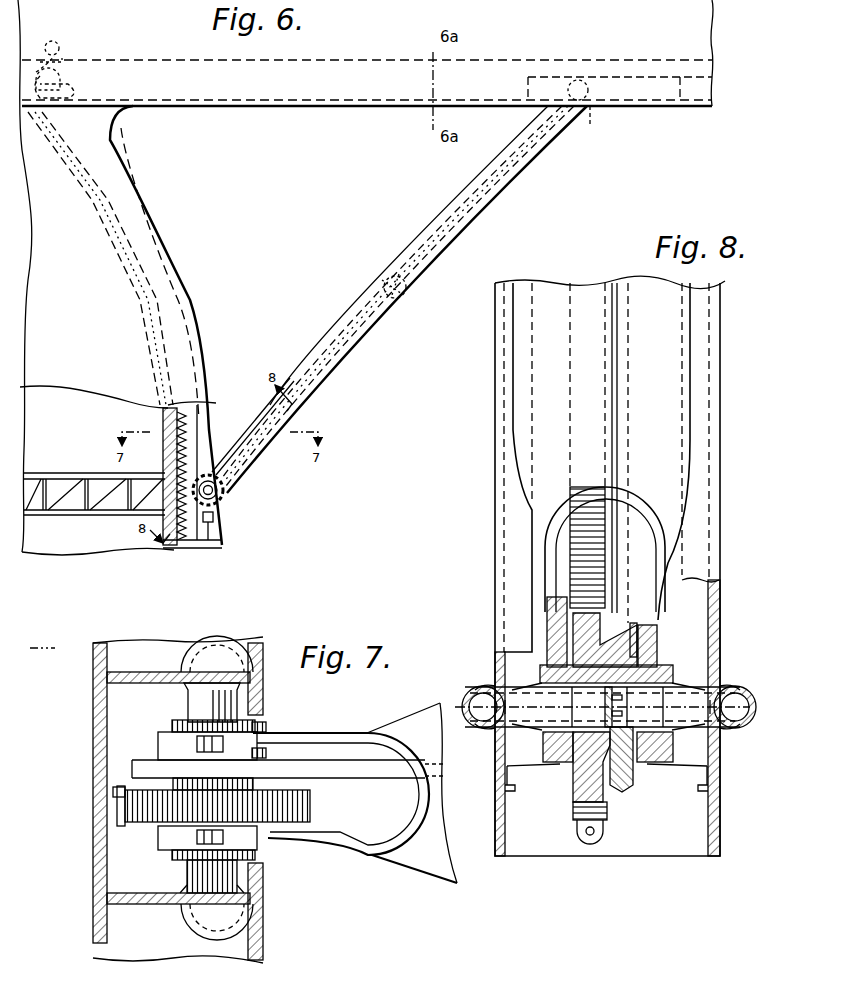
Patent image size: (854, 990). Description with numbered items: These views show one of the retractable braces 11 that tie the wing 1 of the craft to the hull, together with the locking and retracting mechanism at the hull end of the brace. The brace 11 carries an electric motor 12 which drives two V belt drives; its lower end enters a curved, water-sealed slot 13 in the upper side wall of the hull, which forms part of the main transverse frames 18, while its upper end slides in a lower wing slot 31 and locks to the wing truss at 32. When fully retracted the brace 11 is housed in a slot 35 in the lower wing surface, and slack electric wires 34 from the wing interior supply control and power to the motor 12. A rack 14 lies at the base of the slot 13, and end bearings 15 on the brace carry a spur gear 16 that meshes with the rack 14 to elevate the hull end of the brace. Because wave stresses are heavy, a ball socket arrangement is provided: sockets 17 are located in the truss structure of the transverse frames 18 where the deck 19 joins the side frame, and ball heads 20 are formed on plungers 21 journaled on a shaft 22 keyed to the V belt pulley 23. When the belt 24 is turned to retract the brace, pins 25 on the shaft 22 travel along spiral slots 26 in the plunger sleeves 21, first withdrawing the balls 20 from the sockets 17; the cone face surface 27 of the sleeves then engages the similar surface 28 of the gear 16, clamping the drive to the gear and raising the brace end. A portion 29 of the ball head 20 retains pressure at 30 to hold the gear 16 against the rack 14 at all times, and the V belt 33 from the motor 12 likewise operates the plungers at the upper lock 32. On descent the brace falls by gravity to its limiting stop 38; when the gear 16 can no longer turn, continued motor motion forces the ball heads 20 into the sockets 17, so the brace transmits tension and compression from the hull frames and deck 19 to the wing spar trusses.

In FIG. 6, the wing 1 is at (716, 30).
In FIG. 6, the brace 11 is at (114, 70).
In FIG. 8, the brace 11 is at (690, 376).
In FIG. 7, the brace 11 is at (435, 875).
In FIG. 6, the electric motor 12 is at (410, 298).
In FIG. 6, the slot 13 is at (205, 463).
In FIG. 7, the slot 13 is at (245, 880).
In FIG. 6, the rack 14 is at (122, 222).
In FIG. 8, the rack 14 is at (590, 283).
In FIG. 7, the rack 14 is at (125, 785).
In FIG. 8, the end bearings 15 is at (548, 630).
In FIG. 7, the end bearings 15 is at (258, 728).
In FIG. 6, the spur gear 16 is at (226, 494).
In FIG. 8, the spur gear 16 is at (573, 806).
In FIG. 7, the spur gear 16 is at (312, 808).
In FIG. 8, the socket 17 is at (470, 695).
In FIG. 7, the socket 17 is at (210, 935).
In FIG. 6, the main transverse frames 18 is at (191, 312).
In FIG. 8, the main transverse frames 18 is at (722, 329).
In FIG. 7, the main transverse frames 18 is at (92, 940).
In FIG. 6, the deck 19 is at (56, 474).
In FIG. 8, the ball heads 20 is at (490, 680).
In FIG. 7, the ball heads 20 is at (218, 652).
In FIG. 8, the plungers 21 is at (498, 758).
In FIG. 7, the plungers 21 is at (252, 716).
In FIG. 8, the shaft 22 is at (665, 712).
In FIG. 8, the V belt pulley 23 is at (632, 786).
In FIG. 6, the belt 24 is at (237, 442).
In FIG. 8, the belt 24 is at (640, 590).
In FIG. 7, the belt 24 is at (353, 768).
In FIG. 8, the pins 25 is at (610, 717).
In FIG. 8, the spiral slots 26 is at (562, 695).
In FIG. 8, the cone face surface 27 is at (497, 672).
In FIG. 8, the surface 28 is at (550, 752).
In FIG. 7, the portion 29 is at (268, 648).
In FIG. 7, the pressure point 30 is at (240, 700).
In FIG. 6, the lower wing slot 31 is at (632, 104).
In FIG. 6, the wing truss lock 32 is at (585, 113).
In FIG. 6, the V belt 33 is at (446, 216).
In FIG. 6, the electric wires 34 is at (58, 46).
In FIG. 6, the slot 35 is at (379, 102).
In FIG. 6, the limiting stop 38 is at (220, 538).
In FIG. 8, the limiting stop 38 is at (508, 790).